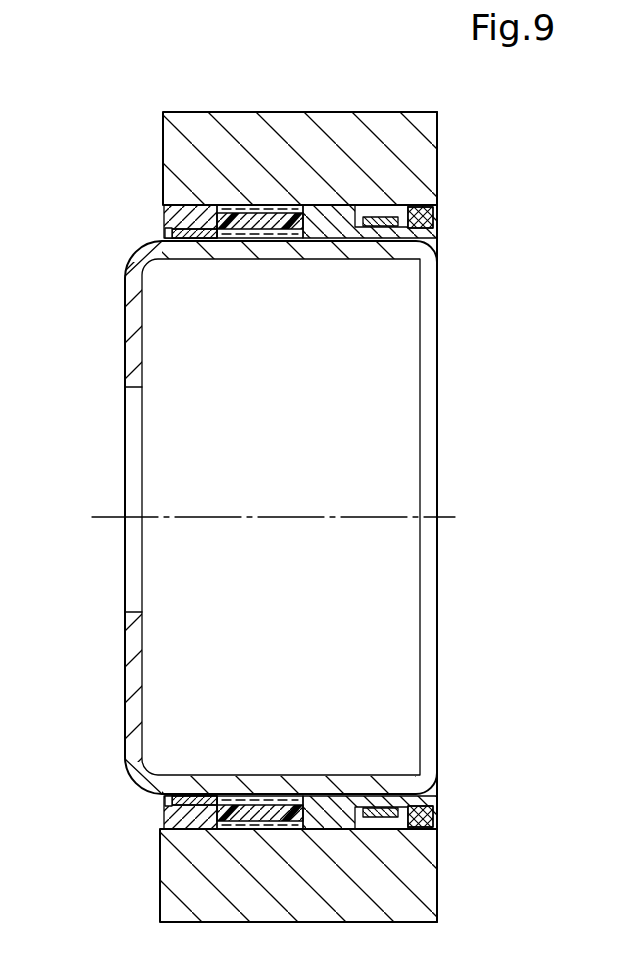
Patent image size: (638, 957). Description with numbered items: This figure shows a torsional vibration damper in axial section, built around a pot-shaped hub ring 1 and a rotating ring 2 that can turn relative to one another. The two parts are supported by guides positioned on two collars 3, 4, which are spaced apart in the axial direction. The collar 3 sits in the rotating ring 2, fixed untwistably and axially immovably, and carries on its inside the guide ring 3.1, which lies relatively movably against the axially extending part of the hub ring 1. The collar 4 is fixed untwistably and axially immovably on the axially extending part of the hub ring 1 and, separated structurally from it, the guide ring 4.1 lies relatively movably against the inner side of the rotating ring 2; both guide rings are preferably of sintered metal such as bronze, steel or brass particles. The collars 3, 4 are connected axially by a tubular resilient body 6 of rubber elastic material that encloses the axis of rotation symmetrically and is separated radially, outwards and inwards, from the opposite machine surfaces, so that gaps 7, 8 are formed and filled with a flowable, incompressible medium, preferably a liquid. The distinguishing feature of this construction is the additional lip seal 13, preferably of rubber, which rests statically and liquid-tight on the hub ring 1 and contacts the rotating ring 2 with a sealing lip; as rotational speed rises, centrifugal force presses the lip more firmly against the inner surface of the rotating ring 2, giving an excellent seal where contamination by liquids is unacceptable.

The hub ring 1 is at (137, 336).
The rotating ring 2 is at (382, 145).
The collar 3 is at (178, 199).
The guide ring 3.1 is at (172, 228).
The collar 4 is at (403, 237).
The guide ring 4.1 is at (430, 192).
The tubular resilient body 6 is at (235, 222).
The gap 7 is at (286, 208).
The gap 8 is at (277, 238).
The lip seal 13 is at (420, 820).